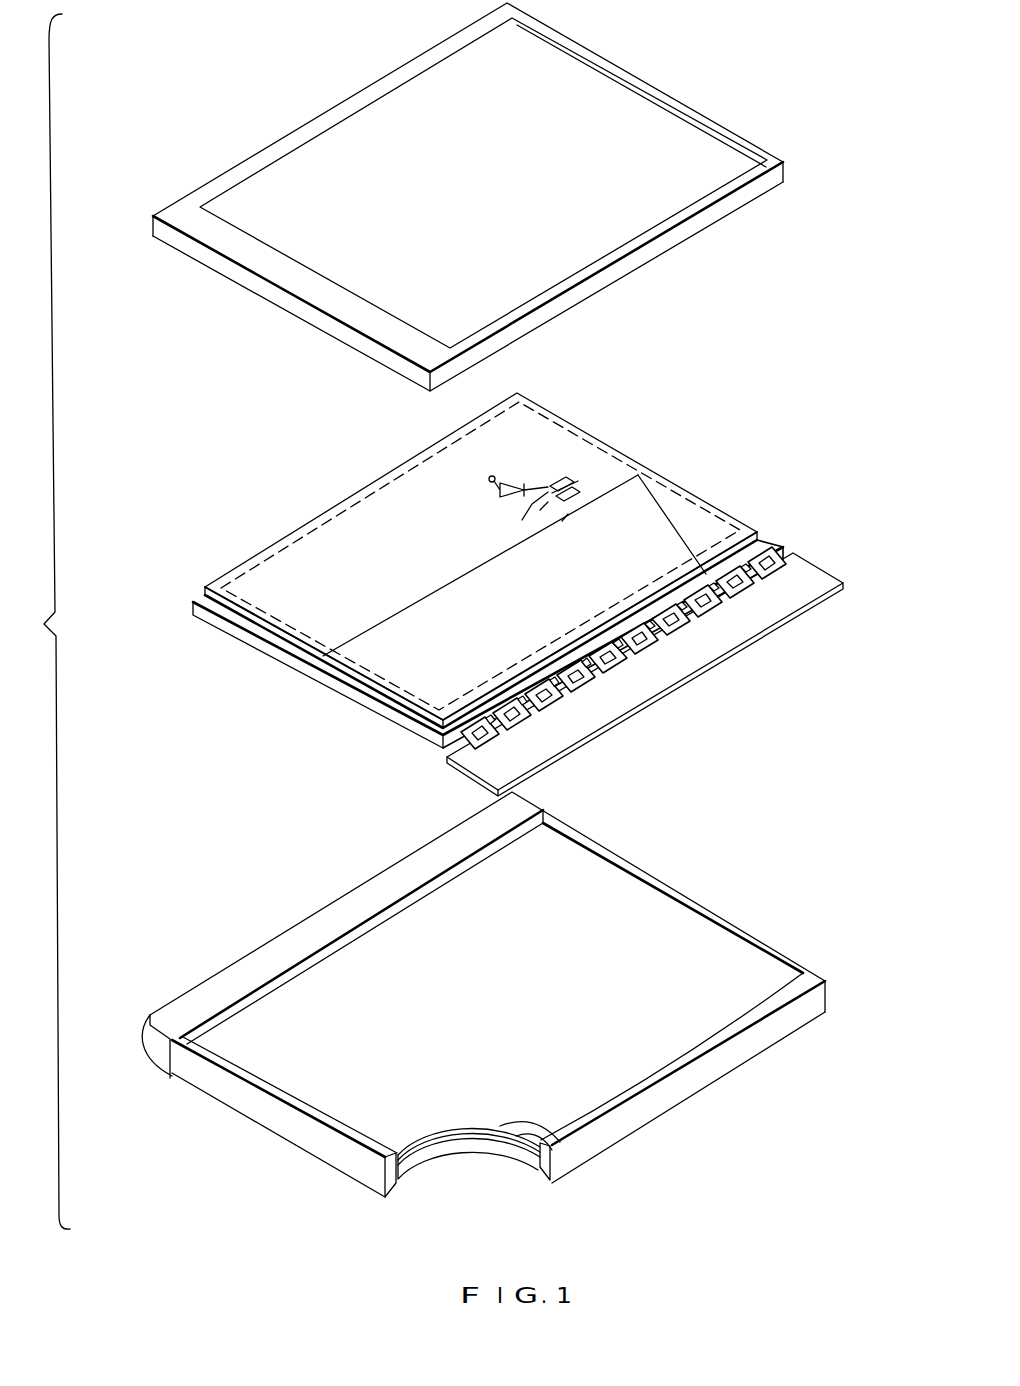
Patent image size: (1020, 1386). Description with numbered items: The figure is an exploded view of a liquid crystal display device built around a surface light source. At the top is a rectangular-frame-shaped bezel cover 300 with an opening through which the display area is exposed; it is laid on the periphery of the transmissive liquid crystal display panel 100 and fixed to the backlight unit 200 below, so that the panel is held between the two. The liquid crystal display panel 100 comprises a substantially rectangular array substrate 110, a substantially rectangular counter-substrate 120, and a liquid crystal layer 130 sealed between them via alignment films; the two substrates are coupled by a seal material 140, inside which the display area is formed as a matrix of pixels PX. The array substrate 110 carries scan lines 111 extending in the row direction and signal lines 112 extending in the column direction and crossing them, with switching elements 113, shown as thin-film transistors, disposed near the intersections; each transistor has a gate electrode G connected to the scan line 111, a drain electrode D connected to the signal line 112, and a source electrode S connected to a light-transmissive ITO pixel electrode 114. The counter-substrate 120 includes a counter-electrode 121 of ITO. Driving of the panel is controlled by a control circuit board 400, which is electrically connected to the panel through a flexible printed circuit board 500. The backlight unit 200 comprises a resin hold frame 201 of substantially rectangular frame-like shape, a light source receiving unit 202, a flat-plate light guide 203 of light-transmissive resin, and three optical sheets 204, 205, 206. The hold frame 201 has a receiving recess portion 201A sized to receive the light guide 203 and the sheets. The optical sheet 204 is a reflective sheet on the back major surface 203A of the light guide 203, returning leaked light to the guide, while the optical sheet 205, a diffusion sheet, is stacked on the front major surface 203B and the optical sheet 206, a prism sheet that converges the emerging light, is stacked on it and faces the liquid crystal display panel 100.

The bezel cover 300 is at (667, 240).
The liquid crystal display panel 100 is at (447, 565).
The array substrate 110 is at (196, 610).
The counter-substrate 120 is at (206, 590).
The seal material 140 is at (614, 447).
The scan line 111 is at (392, 614).
The signal line 112 is at (662, 535).
The pixel PX is at (540, 484).
The counter-electrode 121 is at (488, 477).
The liquid crystal layer 130 is at (500, 500).
The drain electrode D is at (570, 480).
The gate electrode G is at (608, 509).
The source electrode S is at (562, 506).
The switching element 113 is at (566, 524).
The pixel electrode 114 is at (540, 510).
The control circuit board 400 is at (730, 632).
The flexible printed circuit board 500 is at (777, 540).
The backlight unit 200 is at (483, 1016).
The hold frame 201 is at (720, 1063).
The light source receiving unit 202 is at (252, 967).
The light guide 203 is at (550, 1160).
The major surface (back surface) of light guide 203A is at (469, 1148).
The major surface (front surface) of light guide 203B is at (470, 1127).
The optical sheet 204 is at (493, 1153).
The optical sheet 205 is at (530, 1148).
The optical sheet 206 is at (560, 1130).
The receiving recess portion 201A is at (413, 1177).